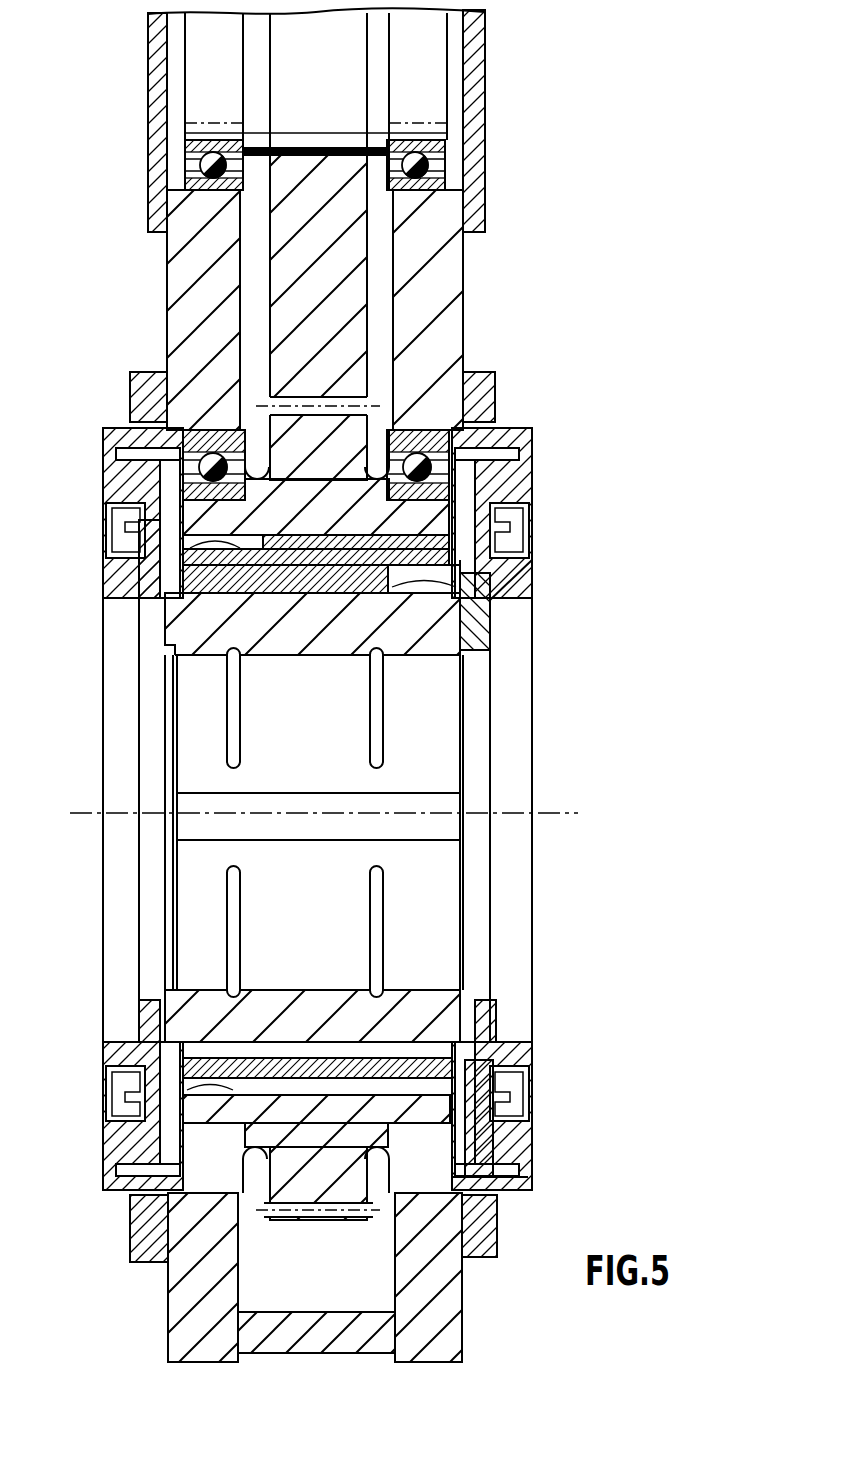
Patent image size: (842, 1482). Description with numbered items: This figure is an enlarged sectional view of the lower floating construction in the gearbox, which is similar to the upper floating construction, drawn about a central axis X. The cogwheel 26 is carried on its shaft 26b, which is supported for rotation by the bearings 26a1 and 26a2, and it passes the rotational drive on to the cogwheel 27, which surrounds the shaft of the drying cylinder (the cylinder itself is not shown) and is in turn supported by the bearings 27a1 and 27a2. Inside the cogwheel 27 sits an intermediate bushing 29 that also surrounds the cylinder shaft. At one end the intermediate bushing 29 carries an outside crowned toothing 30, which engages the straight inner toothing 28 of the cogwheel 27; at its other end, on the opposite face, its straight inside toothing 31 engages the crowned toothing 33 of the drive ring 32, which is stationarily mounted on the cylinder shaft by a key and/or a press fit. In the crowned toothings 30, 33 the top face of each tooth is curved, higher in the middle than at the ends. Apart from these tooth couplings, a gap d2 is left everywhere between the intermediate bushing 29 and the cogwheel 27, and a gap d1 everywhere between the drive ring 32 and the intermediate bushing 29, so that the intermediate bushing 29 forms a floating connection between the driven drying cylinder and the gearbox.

The shaft of the cogwheel 26b is at (375, 76).
The rotational bearing 26a1 is at (200, 170).
The rotational bearing 26a2 is at (448, 148).
The cogwheel 26 is at (338, 277).
The bearing 27a1 is at (212, 468).
The bearing 27a2 is at (420, 466).
The cogwheel 27 is at (325, 515).
The straight toothing 28 is at (240, 541).
The intermediate bushing 29 is at (455, 552).
The crowned toothing 30 is at (250, 549).
The straight inside toothing 31 is at (420, 585).
The gap d1 is at (215, 583).
The drive ring 32 is at (430, 998).
The crowned toothing 33 is at (455, 640).
The gap d2 is at (232, 1053).
The axis X' X is at (563, 812).